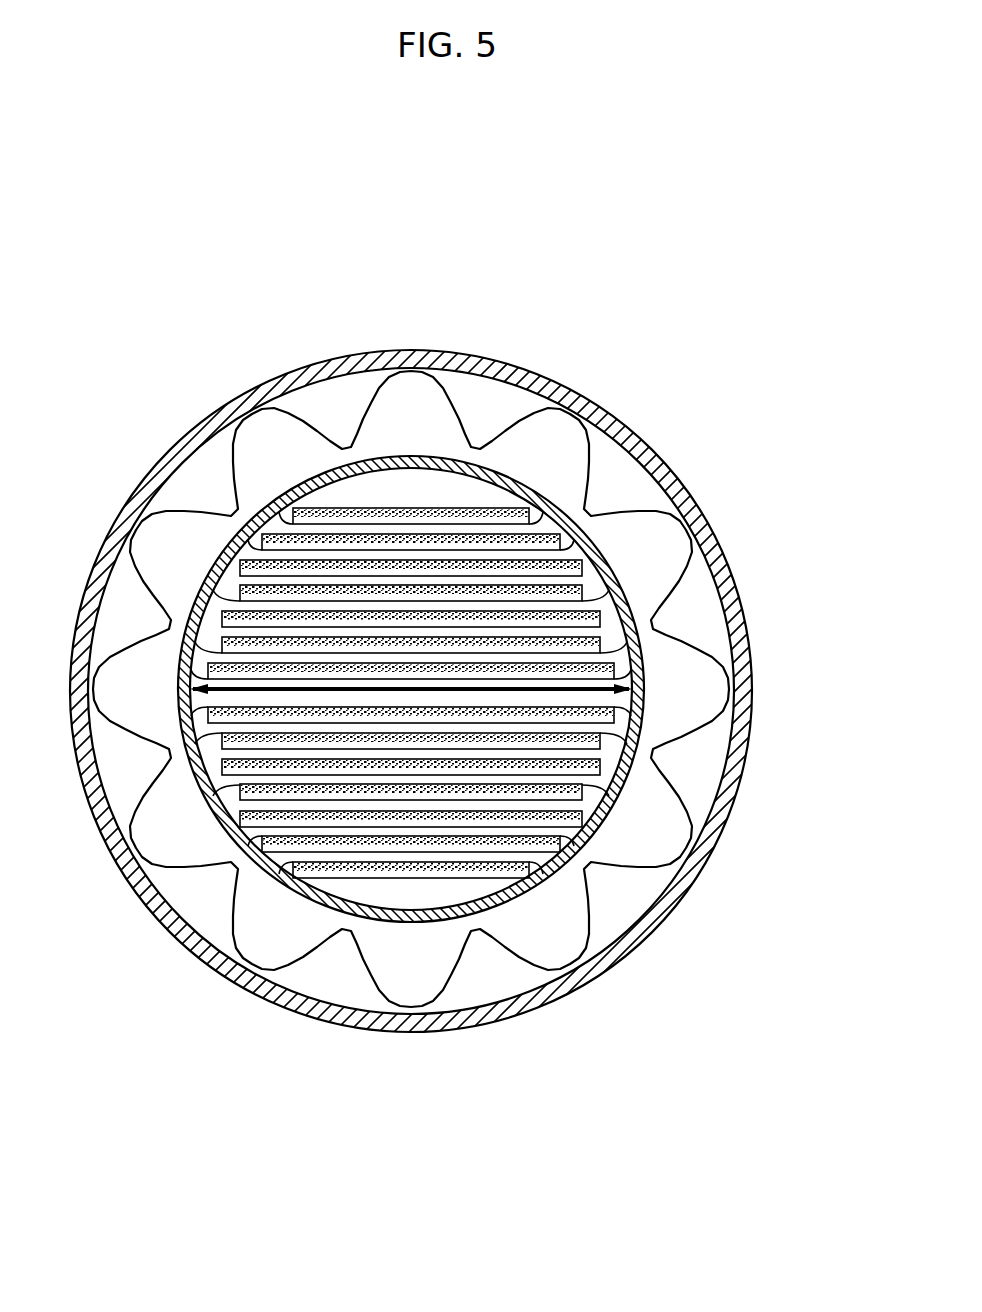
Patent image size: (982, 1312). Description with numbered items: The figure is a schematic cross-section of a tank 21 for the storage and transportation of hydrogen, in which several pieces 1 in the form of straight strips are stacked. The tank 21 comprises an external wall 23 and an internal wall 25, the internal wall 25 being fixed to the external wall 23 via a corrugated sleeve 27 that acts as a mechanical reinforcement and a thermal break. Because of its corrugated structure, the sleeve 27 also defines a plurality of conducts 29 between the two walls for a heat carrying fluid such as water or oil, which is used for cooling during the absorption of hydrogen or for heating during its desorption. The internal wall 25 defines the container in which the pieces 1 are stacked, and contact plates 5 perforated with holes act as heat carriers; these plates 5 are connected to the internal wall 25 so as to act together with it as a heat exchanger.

The tank 21 is at (660, 349).
The external wall 23 is at (753, 737).
The internal wall 25 is at (557, 502).
The corrugated sleeve 27 is at (670, 803).
The conducts 29 is at (282, 928).
The pieces 1 is at (565, 521).
The contact plates 5 is at (500, 773).